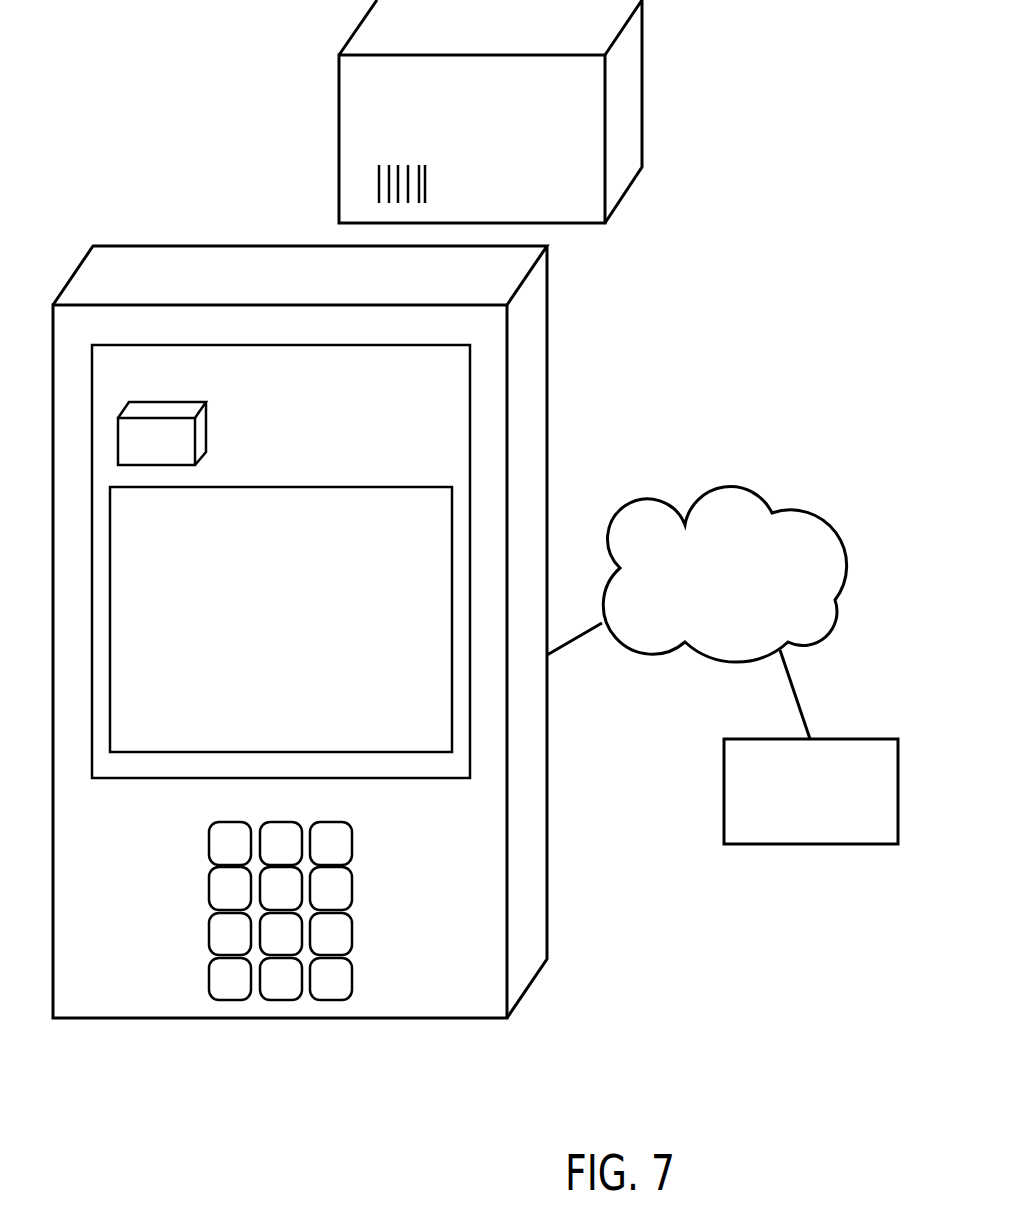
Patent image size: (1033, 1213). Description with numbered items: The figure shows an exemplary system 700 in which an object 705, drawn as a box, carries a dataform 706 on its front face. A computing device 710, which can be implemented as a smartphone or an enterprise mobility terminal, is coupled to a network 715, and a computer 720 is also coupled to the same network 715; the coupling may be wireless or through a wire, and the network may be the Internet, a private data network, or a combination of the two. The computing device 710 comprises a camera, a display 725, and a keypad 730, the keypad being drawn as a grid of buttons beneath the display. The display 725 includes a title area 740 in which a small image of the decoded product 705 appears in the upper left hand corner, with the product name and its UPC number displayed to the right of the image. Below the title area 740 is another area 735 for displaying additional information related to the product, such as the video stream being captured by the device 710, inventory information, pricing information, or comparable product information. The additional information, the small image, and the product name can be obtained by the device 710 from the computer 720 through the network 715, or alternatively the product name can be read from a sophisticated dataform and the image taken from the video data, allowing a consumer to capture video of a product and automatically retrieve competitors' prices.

The system 700 is at (843, 94).
The object 705 is at (638, 137).
The dataform 706 is at (435, 153).
The computing device 710 is at (547, 342).
The network 715 is at (748, 485).
The computer 720 is at (812, 844).
The display 725 is at (398, 778).
The keypad 730 is at (372, 813).
The area for displaying additional information 735 is at (297, 714).
The title area 740 is at (403, 357).